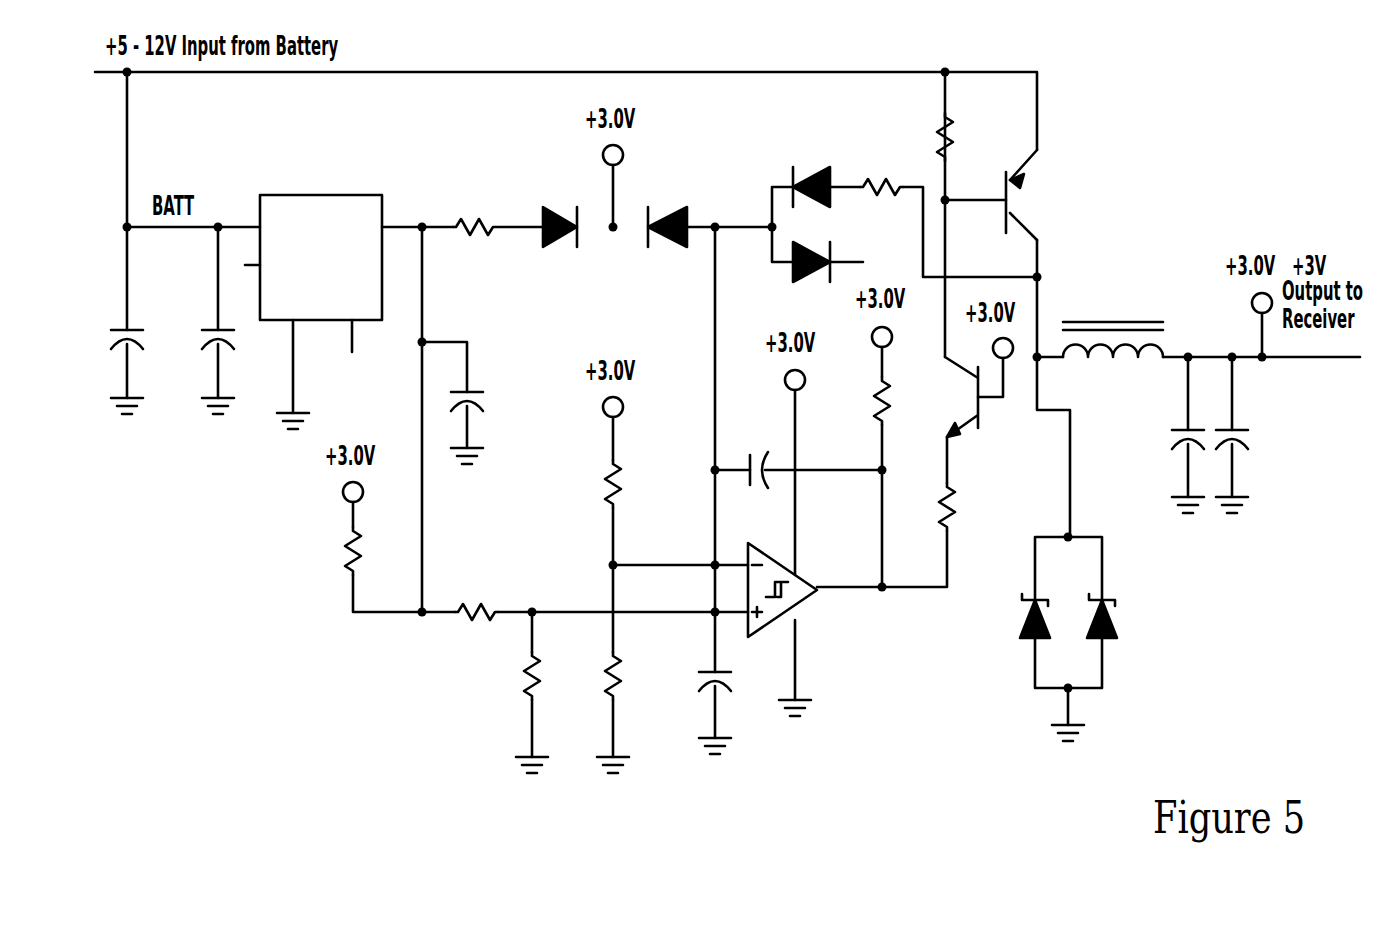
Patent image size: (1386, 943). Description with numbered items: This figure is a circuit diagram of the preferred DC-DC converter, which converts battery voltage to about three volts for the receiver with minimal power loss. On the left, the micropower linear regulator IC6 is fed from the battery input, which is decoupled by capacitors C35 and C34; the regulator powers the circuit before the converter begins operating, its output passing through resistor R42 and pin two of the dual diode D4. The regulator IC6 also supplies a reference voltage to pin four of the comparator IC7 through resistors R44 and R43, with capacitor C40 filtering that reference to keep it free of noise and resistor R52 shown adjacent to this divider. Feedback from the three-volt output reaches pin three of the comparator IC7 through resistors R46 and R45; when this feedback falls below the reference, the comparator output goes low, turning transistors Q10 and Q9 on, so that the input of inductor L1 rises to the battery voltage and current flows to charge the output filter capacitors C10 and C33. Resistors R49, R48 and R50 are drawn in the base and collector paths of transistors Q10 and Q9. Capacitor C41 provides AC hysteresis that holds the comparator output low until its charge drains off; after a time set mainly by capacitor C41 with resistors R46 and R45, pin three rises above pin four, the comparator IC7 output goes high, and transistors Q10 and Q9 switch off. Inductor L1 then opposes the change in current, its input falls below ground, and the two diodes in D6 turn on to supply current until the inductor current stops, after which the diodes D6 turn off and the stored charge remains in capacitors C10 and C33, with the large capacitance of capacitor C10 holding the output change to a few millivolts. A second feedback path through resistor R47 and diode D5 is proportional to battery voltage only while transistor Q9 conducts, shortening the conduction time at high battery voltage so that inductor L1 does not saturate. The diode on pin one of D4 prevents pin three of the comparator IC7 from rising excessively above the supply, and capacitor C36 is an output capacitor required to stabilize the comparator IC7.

The micropower linear regulator IC6 is at (321, 237).
The capacitor C35 is at (105, 355).
The capacitor C34 is at (197, 358).
The output capacitor C36 is at (484, 417).
The resistor R42 is at (474, 187).
The dual diode D4 is at (612, 236).
The diode D5 is at (790, 183).
The resistor R47 is at (880, 150).
The resistor R50 is at (969, 127).
The transistor Q9 is at (1070, 190).
The transistor Q10 is at (1002, 416).
The inductor L1 is at (1113, 300).
The output filter capacitor C10 is at (1142, 455).
The output filter capacitor C33 is at (1261, 445).
The dual diode D6 is at (1111, 615).
The resistor R49 is at (925, 508).
The resistor R48 is at (862, 411).
The capacitor C41 is at (752, 435).
The comparator IC7 is at (831, 602).
The resistor R46 is at (590, 485).
The resistor R44 is at (475, 576).
The resistor R52 is at (333, 546).
The resistor R43 is at (511, 679).
The resistor R45 is at (593, 679).
The capacitor C40 is at (690, 700).